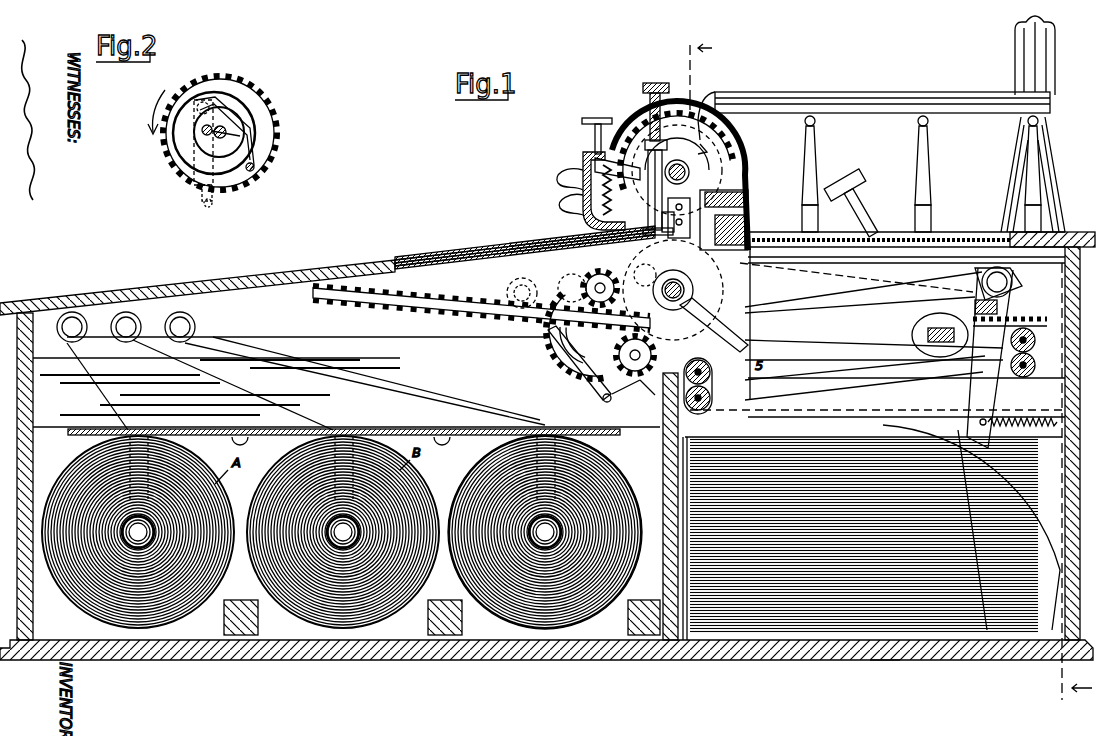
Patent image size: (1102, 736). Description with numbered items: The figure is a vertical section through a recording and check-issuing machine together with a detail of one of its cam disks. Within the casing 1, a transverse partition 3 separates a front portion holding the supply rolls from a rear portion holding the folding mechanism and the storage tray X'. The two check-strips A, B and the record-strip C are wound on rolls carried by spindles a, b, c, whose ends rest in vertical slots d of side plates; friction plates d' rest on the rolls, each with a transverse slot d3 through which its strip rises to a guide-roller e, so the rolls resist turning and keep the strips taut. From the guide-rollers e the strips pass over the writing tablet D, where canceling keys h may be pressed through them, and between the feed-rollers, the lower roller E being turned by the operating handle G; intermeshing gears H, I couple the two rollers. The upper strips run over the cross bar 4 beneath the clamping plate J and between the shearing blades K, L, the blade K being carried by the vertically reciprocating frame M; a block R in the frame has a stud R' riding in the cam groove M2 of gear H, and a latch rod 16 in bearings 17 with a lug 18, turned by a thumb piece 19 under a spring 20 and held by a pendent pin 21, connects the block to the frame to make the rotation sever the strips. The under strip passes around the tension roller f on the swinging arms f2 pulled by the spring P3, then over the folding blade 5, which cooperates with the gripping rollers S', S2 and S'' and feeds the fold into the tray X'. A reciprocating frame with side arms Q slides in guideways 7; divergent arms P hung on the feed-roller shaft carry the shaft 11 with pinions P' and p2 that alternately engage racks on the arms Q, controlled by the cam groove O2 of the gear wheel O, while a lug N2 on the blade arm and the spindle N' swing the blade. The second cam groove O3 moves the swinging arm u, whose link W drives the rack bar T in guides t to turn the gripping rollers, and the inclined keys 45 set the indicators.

In FIG. 1, the casing 1 is at (388, 655).
In FIG. 1, the transverse partition 3 is at (664, 462).
In FIG. 1, the cross bar 4 is at (888, 375).
In FIG. 1, the swinging folding blade 5 is at (650, 113).
In FIG. 1, the guideways 7 is at (830, 335).
In FIG. 2, the rotary shaft 11 is at (256, 167).
In FIG. 1, the vertical rod 16 is at (660, 190).
In FIG. 1, the bearings 17 is at (636, 130).
In FIG. 1, the lug 18 is at (668, 216).
In FIG. 1, the sliding thumb piece 19 is at (662, 100).
In FIG. 1, the spring 20 is at (656, 83).
In FIG. 1, the pendent pin 21 is at (618, 180).
In FIG. 1, the keys 45 is at (866, 212).
In FIG. 1, the check-strip A is at (424, 258).
In FIG. 1, the check-strip B is at (450, 257).
In FIG. 1, the writing tablet D is at (478, 256).
In FIG. 1, the record-strip C is at (525, 244).
In FIG. 1, the spool case C' is at (545, 532).
In FIG. 1, the feed-roller E is at (648, 118).
In FIG. 1, the operating handle G is at (514, 285).
In FIG. 1, the gear H is at (735, 100).
In FIG. 1, the gear I is at (595, 238).
In FIG. 1, the clamping plate J is at (748, 210).
In FIG. 1, the shearing blade K is at (742, 192).
In FIG. 1, the knife-blade L is at (750, 236).
In FIG. 1, the vertically reciprocating frame M is at (686, 170).
In FIG. 1, the cam groove M2 is at (700, 110).
In FIG. 1, the lug N2 is at (685, 307).
In FIG. 1, the spindle N' is at (649, 396).
In FIG. 2, the gear wheel O is at (262, 118).
In FIG. 1, the gear wheel O is at (552, 355).
In FIG. 2, the cam groove O2 is at (242, 108).
In FIG. 1, the cam groove O2 is at (548, 338).
In FIG. 2, the cam groove O3 is at (240, 136).
In FIG. 1, the divergent arms P is at (592, 283).
In FIG. 1, the pinion P' is at (567, 282).
In FIG. 1, the coiled spring P3 is at (1040, 418).
In FIG. 1, the side arms Q is at (340, 290).
In FIG. 1, the vertically movable block R is at (684, 175).
In FIG. 1, the stud R' is at (882, 80).
In FIG. 1, the gripping roller S2 is at (710, 386).
In FIG. 1, the gripping roller S' is at (1054, 334).
In FIG. 1, the roller S'' is at (1056, 362).
In FIG. 1, the reciprocating rack bar T is at (936, 322).
In FIG. 1, the link W is at (629, 388).
In FIG. 1, the storage tray X' is at (885, 667).
In FIG. 1, the spindle a is at (138, 532).
In FIG. 1, the spindle b is at (343, 532).
In FIG. 1, the spindle c is at (545, 532).
In FIG. 1, the transverse slot d3 is at (130, 428).
In FIG. 1, the vertical slots d is at (350, 385).
In FIG. 1, the friction plates d' is at (385, 385).
In FIG. 1, the guide-roller e is at (126, 327).
In FIG. 1, the tension roller f is at (1008, 284).
In FIG. 1, the side arms f2 is at (990, 358).
In FIG. 1, the canceling keys h is at (594, 128).
In FIG. 1, the pinion n is at (615, 355).
In FIG. 1, the pinion p2 is at (615, 404).
In FIG. 1, the guides t is at (980, 308).
In FIG. 2, the swinging arm u is at (200, 196).